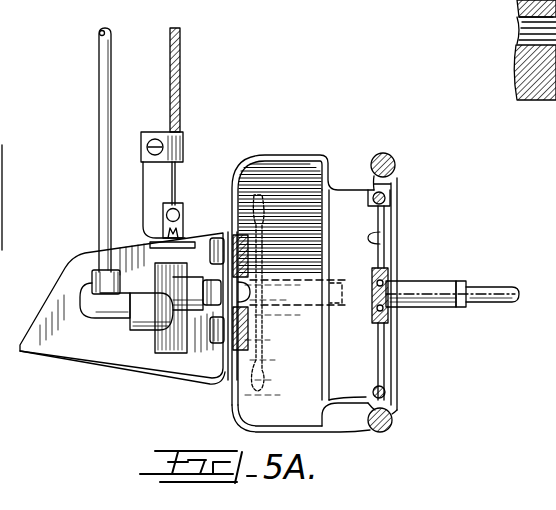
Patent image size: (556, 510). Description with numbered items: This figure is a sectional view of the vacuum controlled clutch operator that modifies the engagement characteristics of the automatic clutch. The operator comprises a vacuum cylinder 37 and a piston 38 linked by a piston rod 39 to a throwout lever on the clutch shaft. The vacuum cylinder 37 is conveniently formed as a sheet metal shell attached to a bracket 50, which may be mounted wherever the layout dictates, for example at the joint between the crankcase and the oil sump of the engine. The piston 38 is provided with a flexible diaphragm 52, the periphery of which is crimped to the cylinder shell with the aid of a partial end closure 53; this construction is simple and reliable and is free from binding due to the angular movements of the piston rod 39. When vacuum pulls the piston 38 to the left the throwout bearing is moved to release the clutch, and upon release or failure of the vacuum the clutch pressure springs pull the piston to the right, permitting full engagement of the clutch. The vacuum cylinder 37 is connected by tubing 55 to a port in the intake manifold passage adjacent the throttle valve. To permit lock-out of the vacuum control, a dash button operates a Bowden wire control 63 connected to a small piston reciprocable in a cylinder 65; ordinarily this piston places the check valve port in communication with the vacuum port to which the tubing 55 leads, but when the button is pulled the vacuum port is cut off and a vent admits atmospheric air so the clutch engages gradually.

The vacuum cylinder 37 is at (272, 156).
The piston 38 is at (380, 240).
The piston rod 39 is at (496, 290).
The bracket 50 is at (117, 362).
The flexible diaphragm 52 is at (320, 404).
The partial end closure 53 is at (398, 181).
The tubing 55 is at (110, 80).
The Bowden wire control 63 is at (176, 102).
The cylinder 65 is at (177, 353).